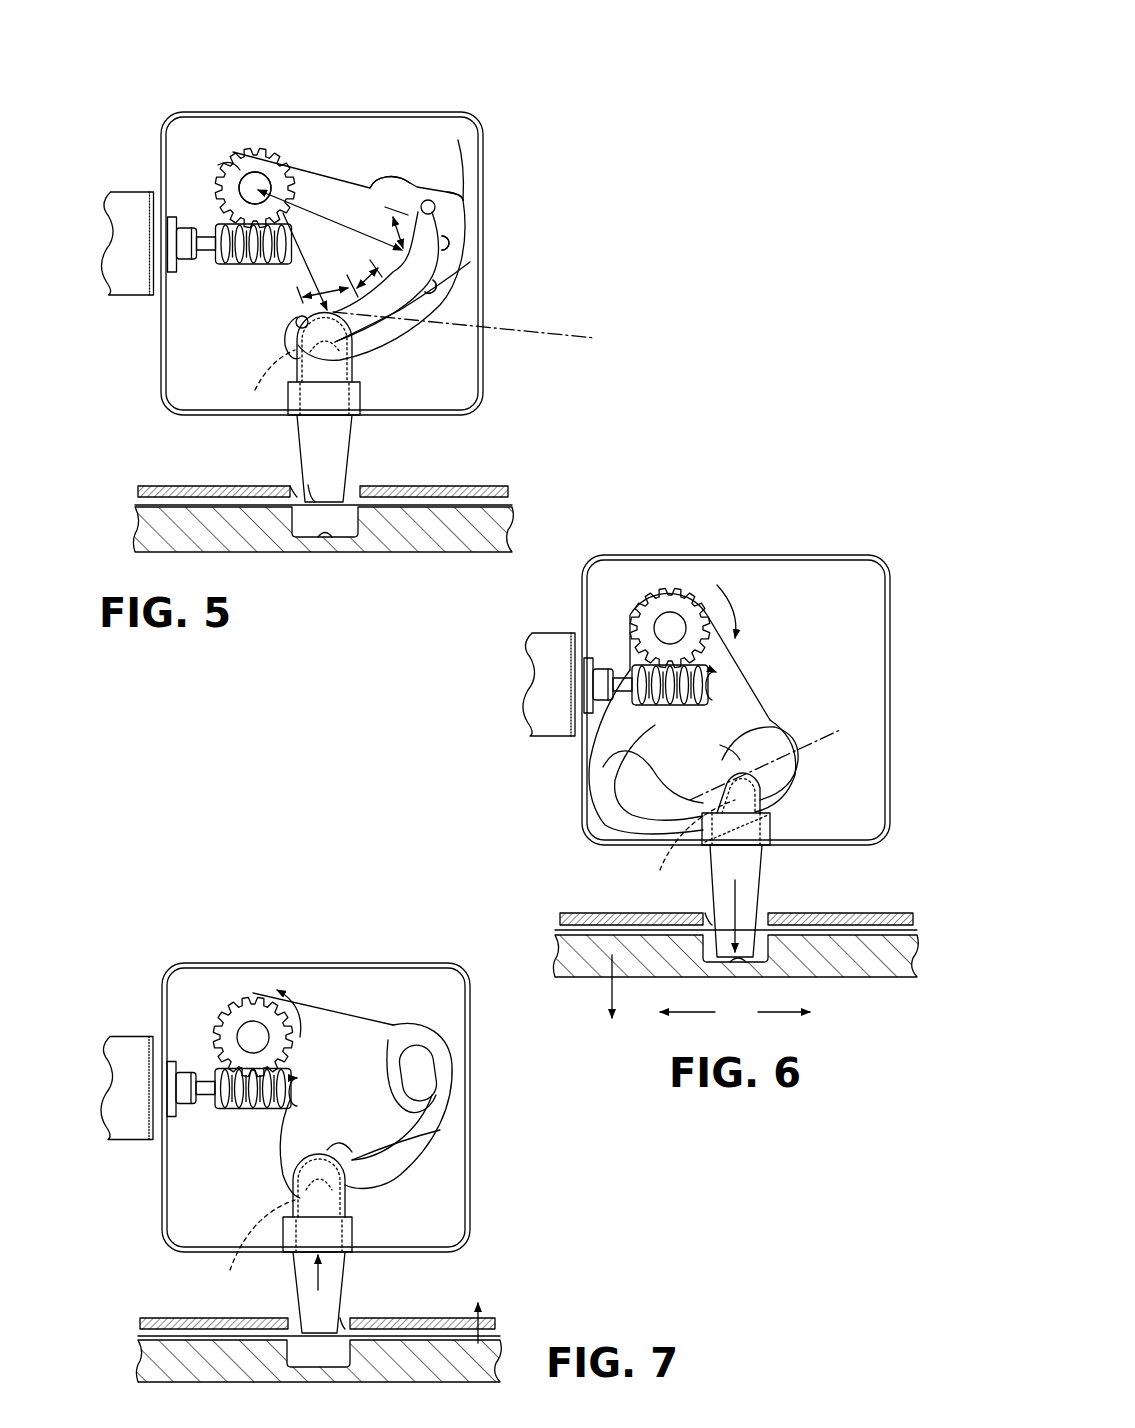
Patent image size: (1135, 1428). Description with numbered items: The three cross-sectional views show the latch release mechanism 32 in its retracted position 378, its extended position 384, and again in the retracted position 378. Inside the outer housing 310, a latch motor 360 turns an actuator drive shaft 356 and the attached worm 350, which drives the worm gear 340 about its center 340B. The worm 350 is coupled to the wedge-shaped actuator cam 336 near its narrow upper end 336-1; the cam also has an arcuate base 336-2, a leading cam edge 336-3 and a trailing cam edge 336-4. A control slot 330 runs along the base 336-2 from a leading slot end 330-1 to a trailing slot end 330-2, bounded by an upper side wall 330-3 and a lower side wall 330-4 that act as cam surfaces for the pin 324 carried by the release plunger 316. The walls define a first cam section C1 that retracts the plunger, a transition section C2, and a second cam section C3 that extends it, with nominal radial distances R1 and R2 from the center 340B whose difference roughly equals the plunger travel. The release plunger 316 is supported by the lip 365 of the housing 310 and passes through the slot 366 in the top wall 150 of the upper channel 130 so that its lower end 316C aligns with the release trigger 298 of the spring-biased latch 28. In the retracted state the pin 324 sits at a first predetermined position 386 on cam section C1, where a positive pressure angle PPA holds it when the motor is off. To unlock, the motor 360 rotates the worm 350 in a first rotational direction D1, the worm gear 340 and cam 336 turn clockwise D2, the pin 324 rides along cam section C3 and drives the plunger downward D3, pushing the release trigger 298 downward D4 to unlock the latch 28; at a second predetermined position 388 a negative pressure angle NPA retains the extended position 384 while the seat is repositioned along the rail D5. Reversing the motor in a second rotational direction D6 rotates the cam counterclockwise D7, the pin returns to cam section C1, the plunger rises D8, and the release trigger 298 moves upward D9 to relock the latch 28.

In FIG. 5, the latch 28 is at (364, 528).
In FIG. 6, the latch 28 is at (728, 992).
In FIG. 7, the latch 28 is at (150, 1366).
In FIG. 5, the latch release mechanism 32 is at (288, 213).
In FIG. 6, the latch release mechanism 32 is at (740, 655).
In FIG. 7, the latch release mechanism 32 is at (281, 1058).
In FIG. 5, the upper channel 130 is at (354, 453).
In FIG. 6, the upper channel 130 is at (712, 929).
In FIG. 7, the upper channel 130 is at (281, 1295).
In FIG. 5, the top wall 150 is at (175, 486).
In FIG. 6, the top wall 150 is at (860, 925).
In FIG. 7, the top wall 150 is at (178, 1318).
In FIG. 5, the release trigger 298 is at (325, 540).
In FIG. 6, the release trigger 298 is at (770, 955).
In FIG. 5, the outer housing 310 is at (455, 103).
In FIG. 6, the outer housing 310 is at (885, 562).
In FIG. 7, the outer housing 310 is at (462, 970).
In FIG. 5, the release plunger 316 is at (414, 408).
In FIG. 6, the release plunger 316 is at (789, 865).
In FIG. 7, the release plunger 316 is at (431, 1243).
In FIG. 5, the lower end 316C is at (328, 493).
In FIG. 5, the pin 324 is at (255, 388).
In FIG. 6, the pin 324 is at (635, 864).
In FIG. 7, the pin 324 is at (228, 1264).
In FIG. 5, the control slot 330 is at (450, 273).
In FIG. 6, the control slot 330 is at (703, 820).
In FIG. 7, the control slot 330 is at (440, 1115).
In FIG. 5, the leading slot end 330-1 is at (296, 322).
In FIG. 5, the trailing slot end 330-2 is at (458, 140).
In FIG. 5, the upper side wall 330-3 is at (445, 238).
In FIG. 5, the lower side wall 330-4 is at (435, 283).
In FIG. 5, the actuator cam 336 is at (328, 175).
In FIG. 6, the actuator cam 336 is at (745, 665).
In FIG. 7, the actuator cam 336 is at (365, 1028).
In FIG. 5, the upper end 336-1 is at (225, 165).
In FIG. 5, the base 336-2 is at (458, 237).
In FIG. 5, the leading cam edge 336-3 is at (287, 347).
In FIG. 5, the trailing cam edge 336-4 is at (372, 186).
In FIG. 5, the worm gear 340 is at (218, 168).
In FIG. 6, the worm gear 340 is at (672, 590).
In FIG. 7, the worm gear 340 is at (258, 998).
In FIG. 5, the center 340B is at (262, 182).
In FIG. 5, the worm 350 is at (232, 265).
In FIG. 6, the worm 350 is at (640, 668).
In FIG. 7, the worm 350 is at (230, 1108).
In FIG. 5, the actuator drive shaft 356 is at (200, 258).
In FIG. 6, the actuator drive shaft 356 is at (620, 702).
In FIG. 7, the actuator drive shaft 356 is at (205, 1072).
In FIG. 5, the latch motor 360 is at (128, 197).
In FIG. 6, the latch motor 360 is at (540, 685).
In FIG. 7, the latch motor 360 is at (128, 1040).
In FIG. 5, the lip 365 is at (345, 400).
In FIG. 6, the lip 365 is at (750, 833).
In FIG. 7, the lip 365 is at (330, 1240).
In FIG. 5, the slot 366 is at (290, 488).
In FIG. 6, the slot 366 is at (705, 913).
In FIG. 7, the slot 366 is at (340, 1320).
In FIG. 5, the retracted position 378 is at (358, 425).
In FIG. 7, the retracted position 378 is at (350, 1262).
In FIG. 6, the extended position 384 is at (765, 888).
In FIG. 5, the first predetermined position 386 is at (420, 305).
In FIG. 7, the first predetermined position 386 is at (290, 1140).
In FIG. 6, the second predetermined position 388 is at (725, 760).
In FIG. 5, the radial distance R1 is at (283, 278).
In FIG. 5, the radial distance R2 is at (318, 163).
In FIG. 5, the first cam section C1 is at (325, 288).
In FIG. 6, the first cam section C1 is at (690, 790).
In FIG. 7, the first cam section C1 is at (352, 1160).
In FIG. 5, the transition section C2 is at (362, 280).
In FIG. 5, the second cam section C3 is at (390, 230).
In FIG. 6, the second cam section C3 is at (720, 785).
In FIG. 7, the second cam section C3 is at (400, 1035).
In FIG. 5, the positive pressure angle PPA is at (560, 330).
In FIG. 6, the negative pressure angle NPA is at (828, 735).
In FIG. 6, the first rotational direction D1 is at (714, 700).
In FIG. 6, the clockwise direction D2 is at (733, 604).
In FIG. 6, the downward movement arrow D3 is at (736, 904).
In FIG. 6, the downward movement arrow D4 is at (609, 1001).
In FIG. 6, the repositioning arrow D5 is at (735, 1013).
In FIG. 7, the second rotational direction D6 is at (300, 1100).
In FIG. 7, the counterclockwise direction D7 is at (300, 1008).
In FIG. 7, the upward movement arrow D8 is at (316, 1285).
In FIG. 7, the upward movement arrow D9 is at (473, 1312).